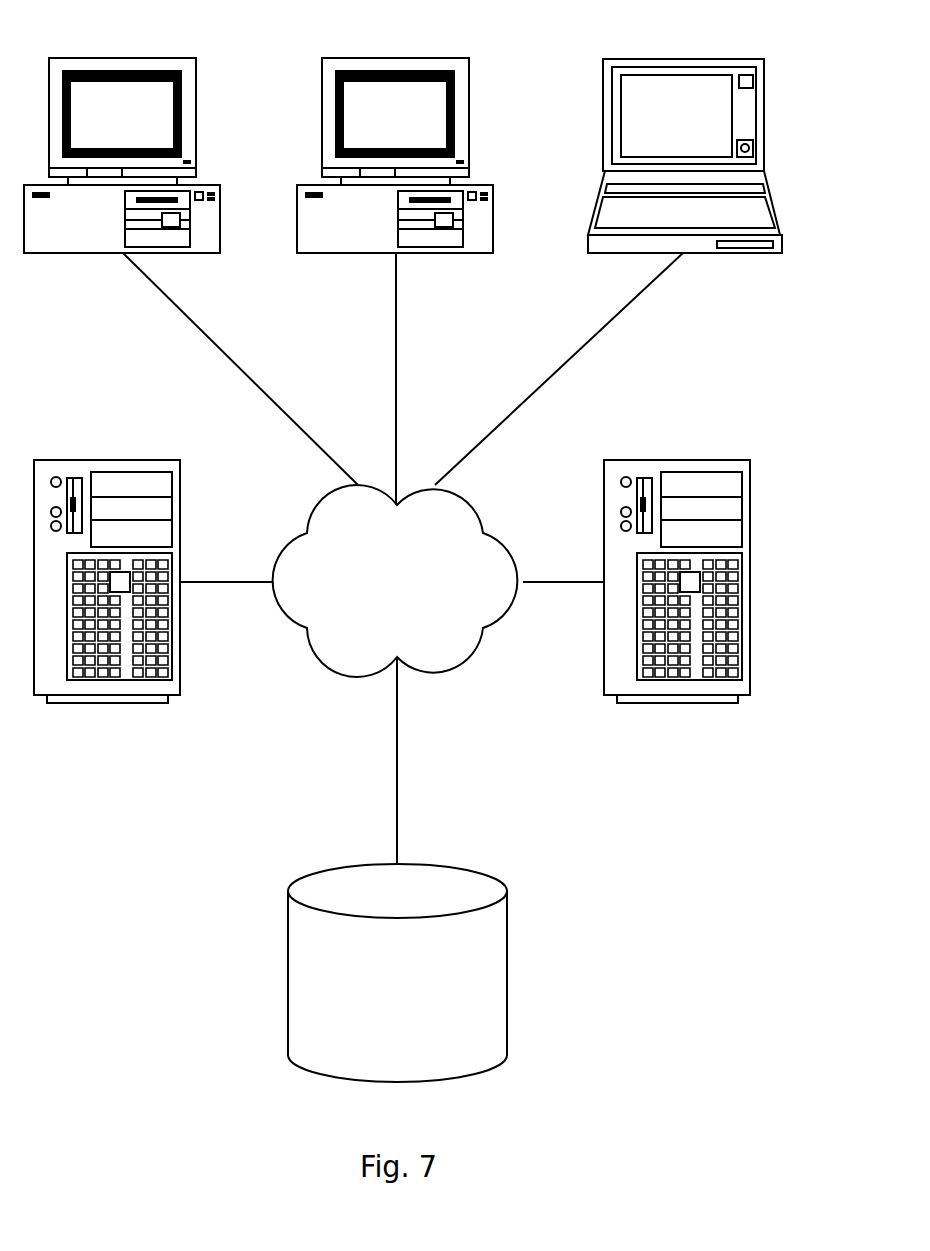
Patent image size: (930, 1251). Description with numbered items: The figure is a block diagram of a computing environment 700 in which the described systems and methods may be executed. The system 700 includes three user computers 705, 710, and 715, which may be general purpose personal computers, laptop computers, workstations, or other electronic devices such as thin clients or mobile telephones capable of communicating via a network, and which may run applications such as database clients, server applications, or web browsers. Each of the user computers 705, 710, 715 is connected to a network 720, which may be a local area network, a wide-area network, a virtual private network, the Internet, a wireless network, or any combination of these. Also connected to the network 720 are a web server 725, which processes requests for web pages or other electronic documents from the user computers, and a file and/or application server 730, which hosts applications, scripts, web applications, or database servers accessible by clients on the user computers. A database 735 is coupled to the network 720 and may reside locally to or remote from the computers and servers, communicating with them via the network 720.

The computing environment 700 is at (743, 1006).
The user computer 705 is at (220, 253).
The user computer 710 is at (493, 253).
The user computer 715 is at (780, 253).
The network 720 is at (453, 673).
The web server 725 is at (180, 665).
The file and/or application server 730 is at (749, 662).
The database 735 is at (507, 973).